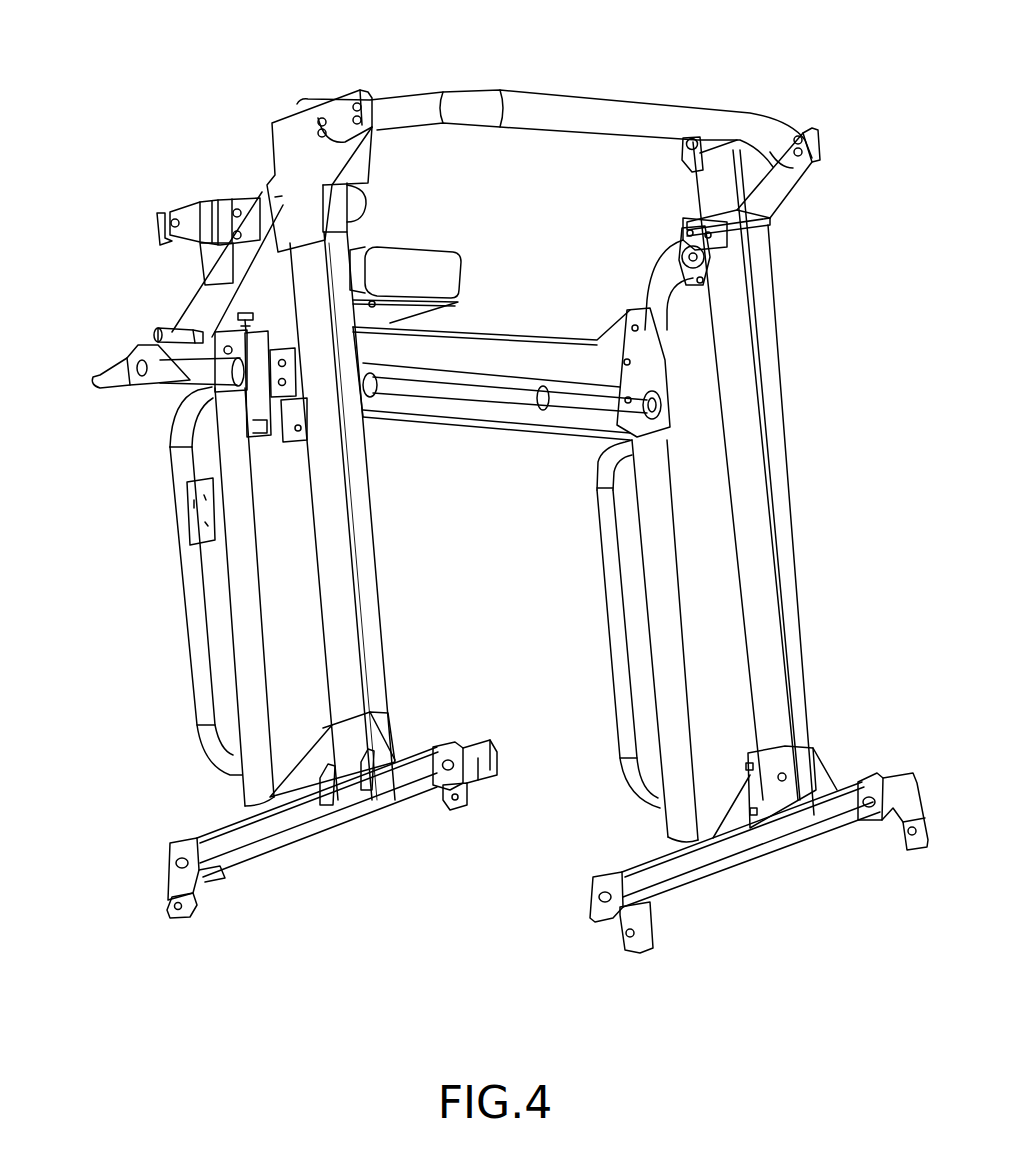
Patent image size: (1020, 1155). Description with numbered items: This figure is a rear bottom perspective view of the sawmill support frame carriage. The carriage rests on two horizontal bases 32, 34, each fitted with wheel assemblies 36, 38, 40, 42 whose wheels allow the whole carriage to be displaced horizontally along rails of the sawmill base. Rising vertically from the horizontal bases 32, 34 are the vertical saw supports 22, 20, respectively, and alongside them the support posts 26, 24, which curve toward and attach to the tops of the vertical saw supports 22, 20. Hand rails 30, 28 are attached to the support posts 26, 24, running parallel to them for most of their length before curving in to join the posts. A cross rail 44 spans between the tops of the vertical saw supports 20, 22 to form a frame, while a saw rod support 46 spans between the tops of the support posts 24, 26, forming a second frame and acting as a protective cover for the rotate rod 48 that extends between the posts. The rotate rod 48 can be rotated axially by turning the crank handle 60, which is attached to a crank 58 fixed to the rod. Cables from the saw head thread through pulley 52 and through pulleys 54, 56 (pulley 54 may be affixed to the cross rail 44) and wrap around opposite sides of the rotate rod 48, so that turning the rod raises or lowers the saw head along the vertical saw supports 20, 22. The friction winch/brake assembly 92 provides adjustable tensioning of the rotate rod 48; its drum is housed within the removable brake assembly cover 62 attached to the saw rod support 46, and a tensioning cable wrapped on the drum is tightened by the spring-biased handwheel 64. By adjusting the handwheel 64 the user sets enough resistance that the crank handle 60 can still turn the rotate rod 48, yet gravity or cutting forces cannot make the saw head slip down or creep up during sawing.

The vertical saw support 20 is at (343, 617).
The vertical saw support 22 is at (778, 515).
The support post 24 is at (240, 568).
The support post 26 is at (663, 627).
The hand rail 28 is at (197, 657).
The hand rail 30 is at (613, 635).
The horizontal base 32 is at (755, 838).
The horizontal base 34 is at (407, 777).
The wheel assembly 36 is at (902, 825).
The wheel assembly 38 is at (642, 920).
The wheel assembly 40 is at (450, 787).
The wheel assembly 42 is at (183, 883).
The cross rail 44 is at (582, 110).
The saw rod support 46 is at (467, 347).
The rotate rod 48 is at (493, 393).
The pulley 52 is at (357, 197).
The pulley 54 is at (723, 238).
The pulley 56 is at (683, 262).
The crank 58 is at (108, 372).
The crank handle 60 is at (177, 333).
The brake assembly cover 62 is at (262, 372).
The handwheel 64 is at (243, 315).
The friction winch/brake assembly 92 is at (290, 360).